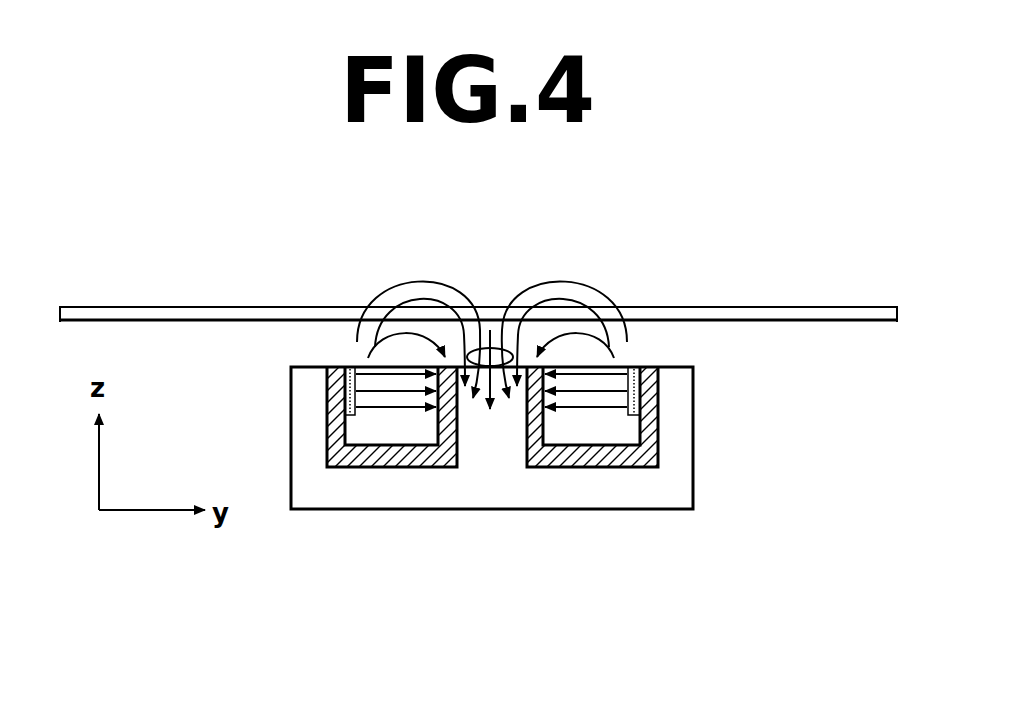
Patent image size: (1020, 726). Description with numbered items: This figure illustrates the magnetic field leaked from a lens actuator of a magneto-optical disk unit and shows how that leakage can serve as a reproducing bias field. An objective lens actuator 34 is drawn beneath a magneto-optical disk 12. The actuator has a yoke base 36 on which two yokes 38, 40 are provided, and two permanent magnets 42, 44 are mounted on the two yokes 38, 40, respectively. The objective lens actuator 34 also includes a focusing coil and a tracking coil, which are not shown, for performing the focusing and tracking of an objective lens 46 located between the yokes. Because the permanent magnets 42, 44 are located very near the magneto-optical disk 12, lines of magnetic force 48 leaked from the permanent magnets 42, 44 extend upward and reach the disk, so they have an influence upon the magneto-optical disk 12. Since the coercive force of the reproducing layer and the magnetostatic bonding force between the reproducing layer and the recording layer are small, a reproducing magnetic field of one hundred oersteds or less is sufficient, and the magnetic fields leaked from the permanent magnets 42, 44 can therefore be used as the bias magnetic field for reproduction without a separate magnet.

The magneto-optical disk 12 is at (776, 305).
The objective lens actuator 34 is at (468, 522).
The yoke base 36 is at (565, 510).
The yoke 38 is at (367, 452).
The yoke 40 is at (637, 467).
The permanent magnet 42 is at (345, 405).
The permanent magnet 44 is at (640, 394).
The objective lens 46 is at (486, 348).
The lines of magnetic force 48 is at (380, 303).